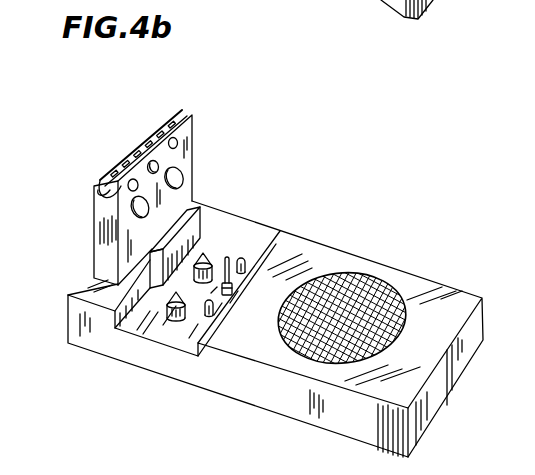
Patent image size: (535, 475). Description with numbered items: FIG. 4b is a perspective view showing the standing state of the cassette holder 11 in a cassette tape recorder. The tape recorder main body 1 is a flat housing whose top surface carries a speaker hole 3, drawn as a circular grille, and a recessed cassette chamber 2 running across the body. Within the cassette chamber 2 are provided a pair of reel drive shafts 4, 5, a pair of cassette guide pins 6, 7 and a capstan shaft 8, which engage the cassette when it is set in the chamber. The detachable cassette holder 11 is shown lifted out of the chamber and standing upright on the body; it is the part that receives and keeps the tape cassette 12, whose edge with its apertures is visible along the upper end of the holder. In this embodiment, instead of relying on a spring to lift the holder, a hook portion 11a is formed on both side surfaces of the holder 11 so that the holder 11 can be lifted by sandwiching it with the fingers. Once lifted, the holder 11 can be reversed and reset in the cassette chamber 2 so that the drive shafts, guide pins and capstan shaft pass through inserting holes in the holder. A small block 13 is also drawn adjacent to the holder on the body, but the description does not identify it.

The tape recorder main body 1 is at (340, 261).
The cassette chamber 2 is at (232, 256).
The speaker hole 3 is at (387, 288).
The reel drive shaft 4 is at (206, 253).
The reel drive shaft 5 is at (175, 309).
The cassette guide pin 6 is at (247, 258).
The cassette guide pin 7 is at (207, 314).
The capstan shaft 8 is at (223, 296).
The cassette holder 11 is at (194, 136).
The hook portion 11a is at (100, 235).
The tape cassette 12 is at (166, 110).
The bar 13 is at (200, 212).